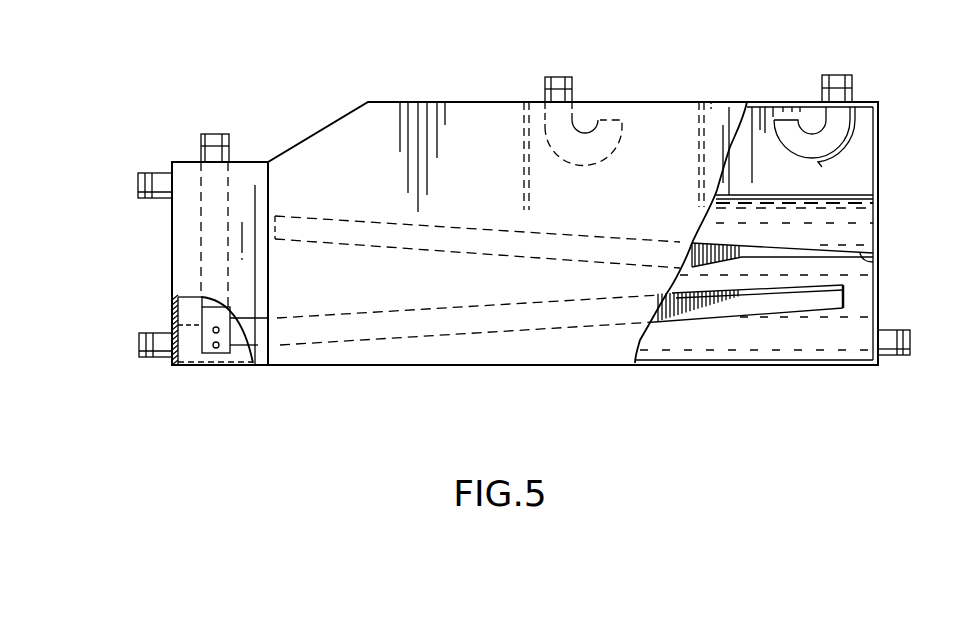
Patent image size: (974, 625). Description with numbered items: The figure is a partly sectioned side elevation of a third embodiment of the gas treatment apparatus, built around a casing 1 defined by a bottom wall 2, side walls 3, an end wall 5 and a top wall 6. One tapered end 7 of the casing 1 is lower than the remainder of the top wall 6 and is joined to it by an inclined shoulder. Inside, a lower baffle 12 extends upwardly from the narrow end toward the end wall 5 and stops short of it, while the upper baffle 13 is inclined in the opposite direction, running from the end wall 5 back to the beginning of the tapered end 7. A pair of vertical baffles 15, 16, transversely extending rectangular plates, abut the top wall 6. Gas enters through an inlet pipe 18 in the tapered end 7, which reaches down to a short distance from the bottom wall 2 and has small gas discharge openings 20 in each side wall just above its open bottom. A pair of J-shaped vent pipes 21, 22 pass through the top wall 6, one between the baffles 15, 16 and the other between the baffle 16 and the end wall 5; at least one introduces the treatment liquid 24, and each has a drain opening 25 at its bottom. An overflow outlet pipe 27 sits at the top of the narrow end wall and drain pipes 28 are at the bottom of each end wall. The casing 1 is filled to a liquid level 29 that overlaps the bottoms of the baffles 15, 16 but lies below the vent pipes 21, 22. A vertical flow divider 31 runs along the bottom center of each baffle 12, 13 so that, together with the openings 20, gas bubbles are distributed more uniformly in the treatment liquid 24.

The casing 1 is at (337, 91).
The bottom wall 2 is at (723, 365).
The side walls 3 is at (344, 186).
The end wall 5 is at (878, 181).
The top wall 6 is at (777, 102).
The tapered end 7 is at (172, 162).
The lower baffle 12 is at (867, 270).
The upper baffle 13 is at (807, 290).
The vertical baffle 15 is at (522, 143).
The vertical baffle 16 is at (697, 165).
The inlet pipe 18 is at (232, 142).
The gas discharge openings 20 is at (212, 322).
The J-shaped vent pipe 21 is at (573, 88).
The J-shaped vent pipe 22 is at (840, 127).
The treatment liquid 24 is at (863, 230).
The drain opening 25 is at (822, 167).
The overflow outlet pipe 27 is at (150, 198).
The drain pipes 28 is at (152, 357).
The liquid level 29 is at (855, 190).
The flow divider 31 is at (777, 280).